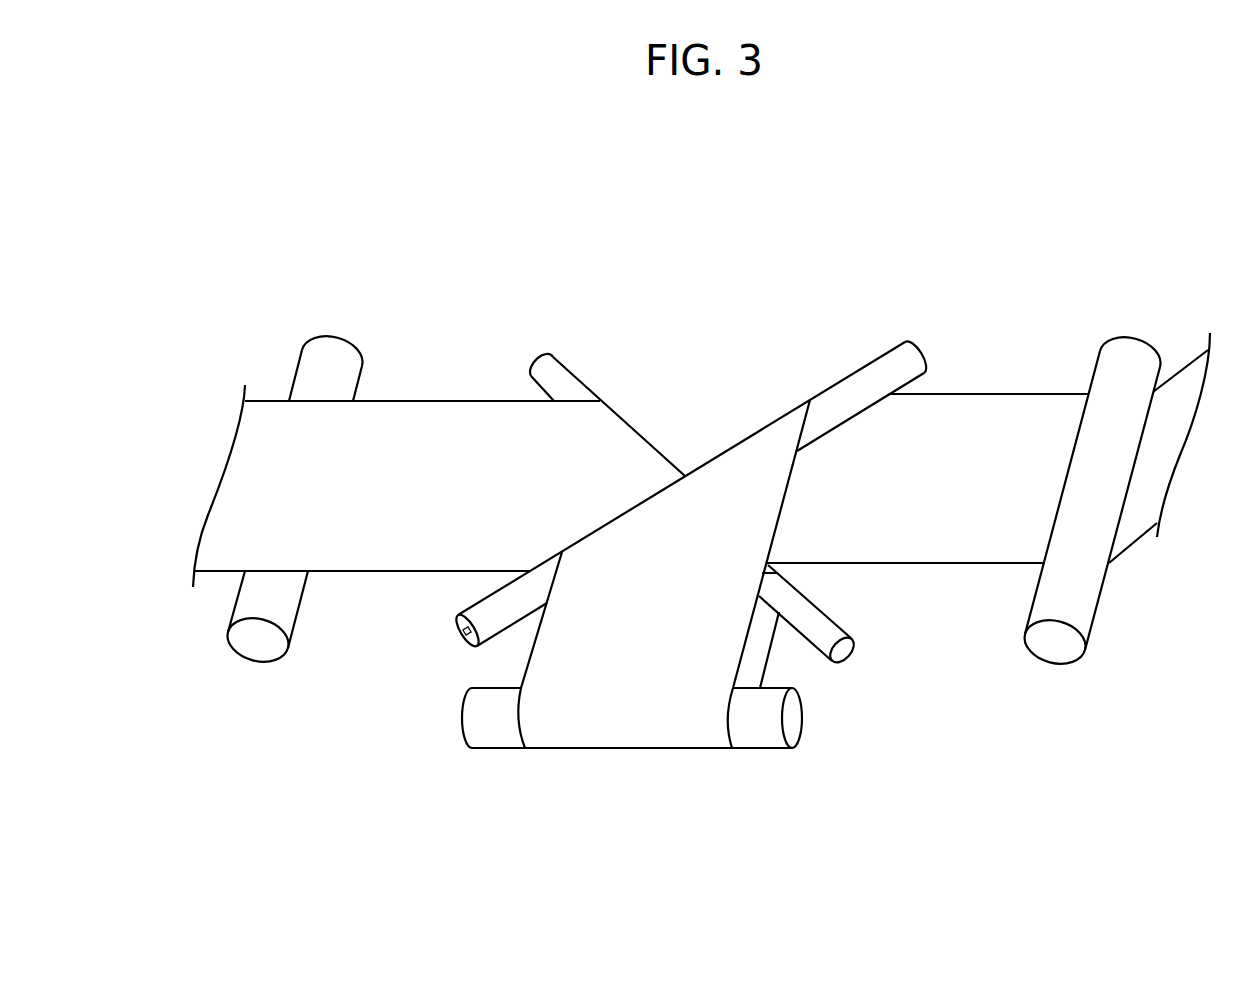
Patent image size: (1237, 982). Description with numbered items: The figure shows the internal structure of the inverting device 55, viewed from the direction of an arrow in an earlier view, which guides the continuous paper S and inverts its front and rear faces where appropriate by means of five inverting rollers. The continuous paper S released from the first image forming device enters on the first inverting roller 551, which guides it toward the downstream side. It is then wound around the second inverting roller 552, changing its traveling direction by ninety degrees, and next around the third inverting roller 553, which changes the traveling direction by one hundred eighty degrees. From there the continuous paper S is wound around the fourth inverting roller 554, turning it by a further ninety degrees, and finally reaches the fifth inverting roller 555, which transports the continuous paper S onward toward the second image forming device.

The inverting device 55 is at (1178, 158).
The first inverting roller 551 is at (358, 346).
The second inverting roller 552 is at (530, 376).
The third inverting roller 553 is at (773, 752).
The fourth inverting roller 554 is at (908, 341).
The fifth inverting roller 555 is at (1158, 357).
The continuous paper S is at (356, 553).